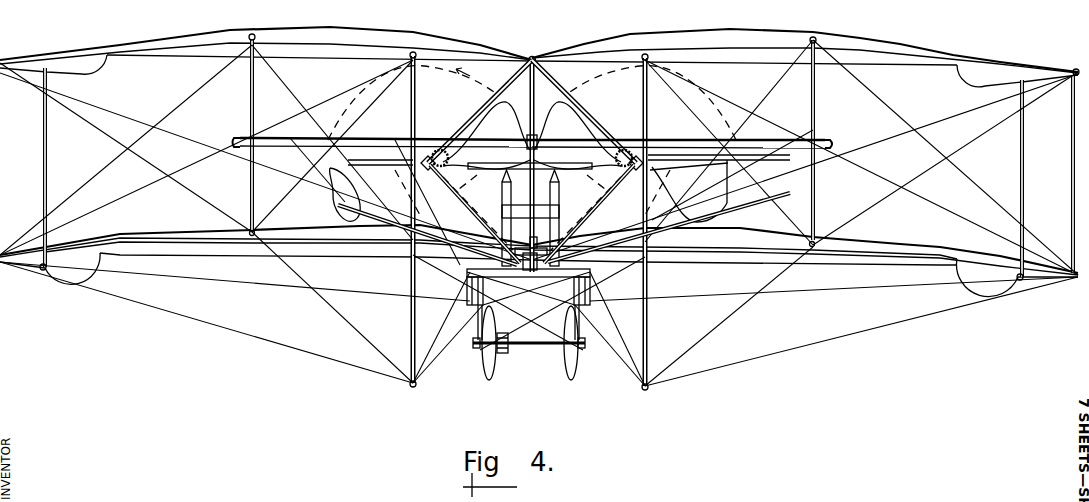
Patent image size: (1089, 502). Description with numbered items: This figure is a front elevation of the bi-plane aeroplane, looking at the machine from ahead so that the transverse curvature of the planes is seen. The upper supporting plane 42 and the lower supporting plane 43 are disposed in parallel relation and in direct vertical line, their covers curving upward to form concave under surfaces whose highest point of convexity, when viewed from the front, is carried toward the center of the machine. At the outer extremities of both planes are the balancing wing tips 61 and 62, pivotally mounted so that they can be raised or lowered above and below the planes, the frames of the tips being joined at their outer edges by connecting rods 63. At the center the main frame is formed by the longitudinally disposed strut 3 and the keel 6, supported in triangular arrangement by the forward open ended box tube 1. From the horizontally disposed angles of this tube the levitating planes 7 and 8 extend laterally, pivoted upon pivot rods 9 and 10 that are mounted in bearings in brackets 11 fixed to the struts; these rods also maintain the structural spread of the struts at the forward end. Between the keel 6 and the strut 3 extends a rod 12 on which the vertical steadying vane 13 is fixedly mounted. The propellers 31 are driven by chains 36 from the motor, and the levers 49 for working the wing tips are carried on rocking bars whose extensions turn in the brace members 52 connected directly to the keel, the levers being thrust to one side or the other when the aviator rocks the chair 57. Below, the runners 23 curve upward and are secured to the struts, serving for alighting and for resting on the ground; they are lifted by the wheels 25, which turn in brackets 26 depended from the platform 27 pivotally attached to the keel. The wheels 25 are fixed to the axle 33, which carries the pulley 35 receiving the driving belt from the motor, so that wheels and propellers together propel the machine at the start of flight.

The box tube 1 is at (480, 110).
The strut 3 is at (531, 50).
The keel 6 is at (526, 247).
The levitating plane 7 is at (678, 144).
The levitating plane 8 is at (298, 136).
The pivot rod 9 is at (829, 144).
The pivot rod 10 is at (232, 138).
The bracket 11 is at (435, 140).
The rod 12 is at (530, 96).
The vertical steadying vane 13 is at (524, 125).
The runner 23 is at (410, 313).
The wheel 25 is at (488, 372).
The bracket 26 is at (478, 308).
The platform 27 is at (467, 288).
The propeller 31 is at (470, 126).
The axle 33 is at (520, 344).
The pulley 35 is at (506, 352).
The chain 36 is at (500, 190).
The supporting plane 42 is at (214, 36).
The supporting plane 43 is at (170, 236).
The lever 49 is at (503, 208).
The brace member 52 is at (455, 226).
The aviator's chair 57 is at (564, 175).
The balancing wing tip 61 is at (89, 68).
The balancing wing tip 62 is at (84, 267).
The connecting rod 63 is at (47, 170).